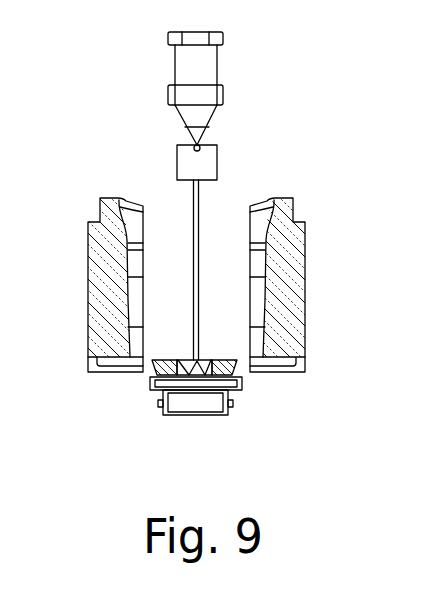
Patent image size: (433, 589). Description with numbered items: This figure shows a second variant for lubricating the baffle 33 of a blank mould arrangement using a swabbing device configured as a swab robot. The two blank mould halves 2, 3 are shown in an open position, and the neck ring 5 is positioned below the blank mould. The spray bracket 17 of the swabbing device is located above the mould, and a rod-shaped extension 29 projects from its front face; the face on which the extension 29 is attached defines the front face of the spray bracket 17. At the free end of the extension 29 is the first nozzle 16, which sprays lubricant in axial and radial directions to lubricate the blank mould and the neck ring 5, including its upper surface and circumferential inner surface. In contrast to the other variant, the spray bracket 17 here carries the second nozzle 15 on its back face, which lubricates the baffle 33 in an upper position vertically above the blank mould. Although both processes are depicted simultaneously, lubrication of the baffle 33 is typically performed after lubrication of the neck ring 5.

The baffle 33 is at (192, 63).
The second nozzle 15 is at (200, 147).
The spray bracket 17 is at (192, 165).
The rod-shaped extension 29 is at (200, 215).
The blank mould half 2 is at (107, 268).
The blank mould half 3 is at (285, 277).
The first nozzle 16 is at (302, 353).
The neck ring 5 is at (175, 393).